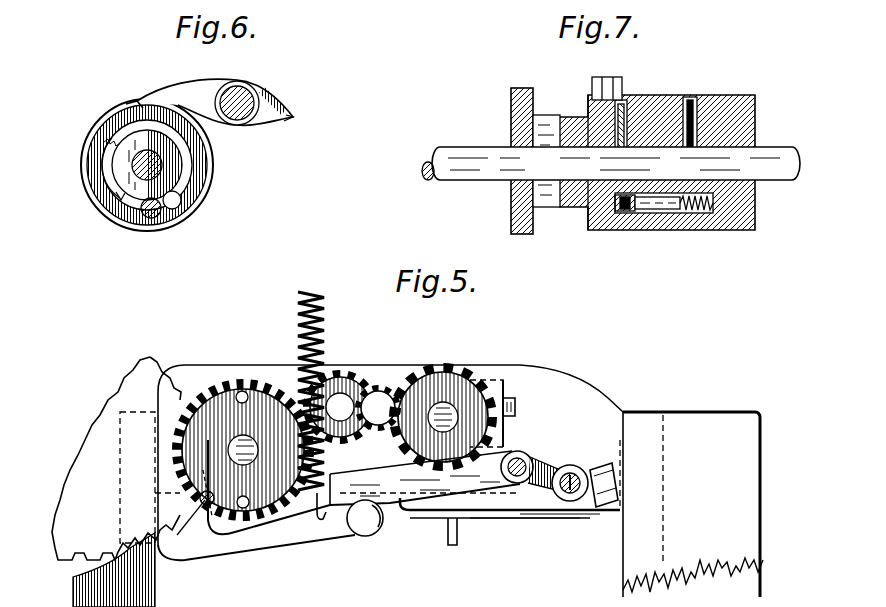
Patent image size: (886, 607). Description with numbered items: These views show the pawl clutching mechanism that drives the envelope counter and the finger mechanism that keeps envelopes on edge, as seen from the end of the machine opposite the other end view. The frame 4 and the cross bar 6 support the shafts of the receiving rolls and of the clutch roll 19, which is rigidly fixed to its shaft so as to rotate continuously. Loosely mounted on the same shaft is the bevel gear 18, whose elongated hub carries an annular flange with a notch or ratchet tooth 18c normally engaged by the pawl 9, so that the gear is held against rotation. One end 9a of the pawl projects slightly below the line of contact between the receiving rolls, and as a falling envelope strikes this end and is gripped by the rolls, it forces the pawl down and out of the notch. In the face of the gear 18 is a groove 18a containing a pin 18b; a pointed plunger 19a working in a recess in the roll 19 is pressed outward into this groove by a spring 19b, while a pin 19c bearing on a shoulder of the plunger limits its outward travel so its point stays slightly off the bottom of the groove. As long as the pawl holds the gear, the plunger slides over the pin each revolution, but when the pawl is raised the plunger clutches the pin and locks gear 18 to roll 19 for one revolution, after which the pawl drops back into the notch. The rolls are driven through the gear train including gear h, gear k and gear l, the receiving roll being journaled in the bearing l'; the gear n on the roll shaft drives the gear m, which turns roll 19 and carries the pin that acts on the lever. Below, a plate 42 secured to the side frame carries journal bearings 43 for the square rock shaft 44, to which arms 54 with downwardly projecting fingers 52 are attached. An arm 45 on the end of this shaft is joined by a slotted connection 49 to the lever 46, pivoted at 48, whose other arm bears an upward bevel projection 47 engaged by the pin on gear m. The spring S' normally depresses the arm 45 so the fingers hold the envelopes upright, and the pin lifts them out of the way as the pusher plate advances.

In FIG. 5, the frame 4 is at (693, 504).
In FIG. 5, the cross bar 6 is at (390, 462).
In FIG. 6, the pawl 9 is at (205, 96).
In FIG. 7, the pawl 9 is at (610, 78).
In FIG. 6, the pawl end 9a is at (296, 117).
In FIG. 6, the bevel gear 18 is at (105, 218).
In FIG. 7, the bevel gear 18 is at (542, 124).
In FIG. 6, the groove 18a is at (190, 176).
In FIG. 7, the groove 18a is at (612, 230).
In FIG. 6, the pin 18b is at (180, 206).
In FIG. 6, the ratchet tooth 18c is at (123, 100).
In FIG. 7, the clutch roll 19 is at (662, 103).
In FIG. 6, the plunger 19a is at (155, 220).
In FIG. 7, the plunger 19a is at (660, 215).
In FIG. 7, the spring 19b is at (705, 215).
In FIG. 7, the pin 19c is at (636, 215).
In FIG. 5, the plate 42 is at (525, 512).
In FIG. 5, the journal bearings 43 is at (618, 500).
In FIG. 5, the shaft 44 is at (570, 490).
In FIG. 5, the arm 45 is at (575, 468).
In FIG. 5, the lever 46 is at (315, 540).
In FIG. 5, the bevel projection 47 is at (207, 506).
In FIG. 5, the pivot 48 is at (370, 536).
In FIG. 5, the slotted connection 49 is at (522, 458).
In FIG. 5, the finger 52 is at (448, 540).
In FIG. 5, the arm 54 is at (492, 520).
In FIG. 5, the gear h is at (150, 357).
In FIG. 5, the gear k is at (352, 382).
In FIG. 5, the gear l is at (443, 402).
In FIG. 5, the bearing l' is at (503, 413).
In FIG. 5, the gear m is at (248, 395).
In FIG. 5, the gear n is at (384, 390).
In FIG. 5, the spring S' is at (319, 391).